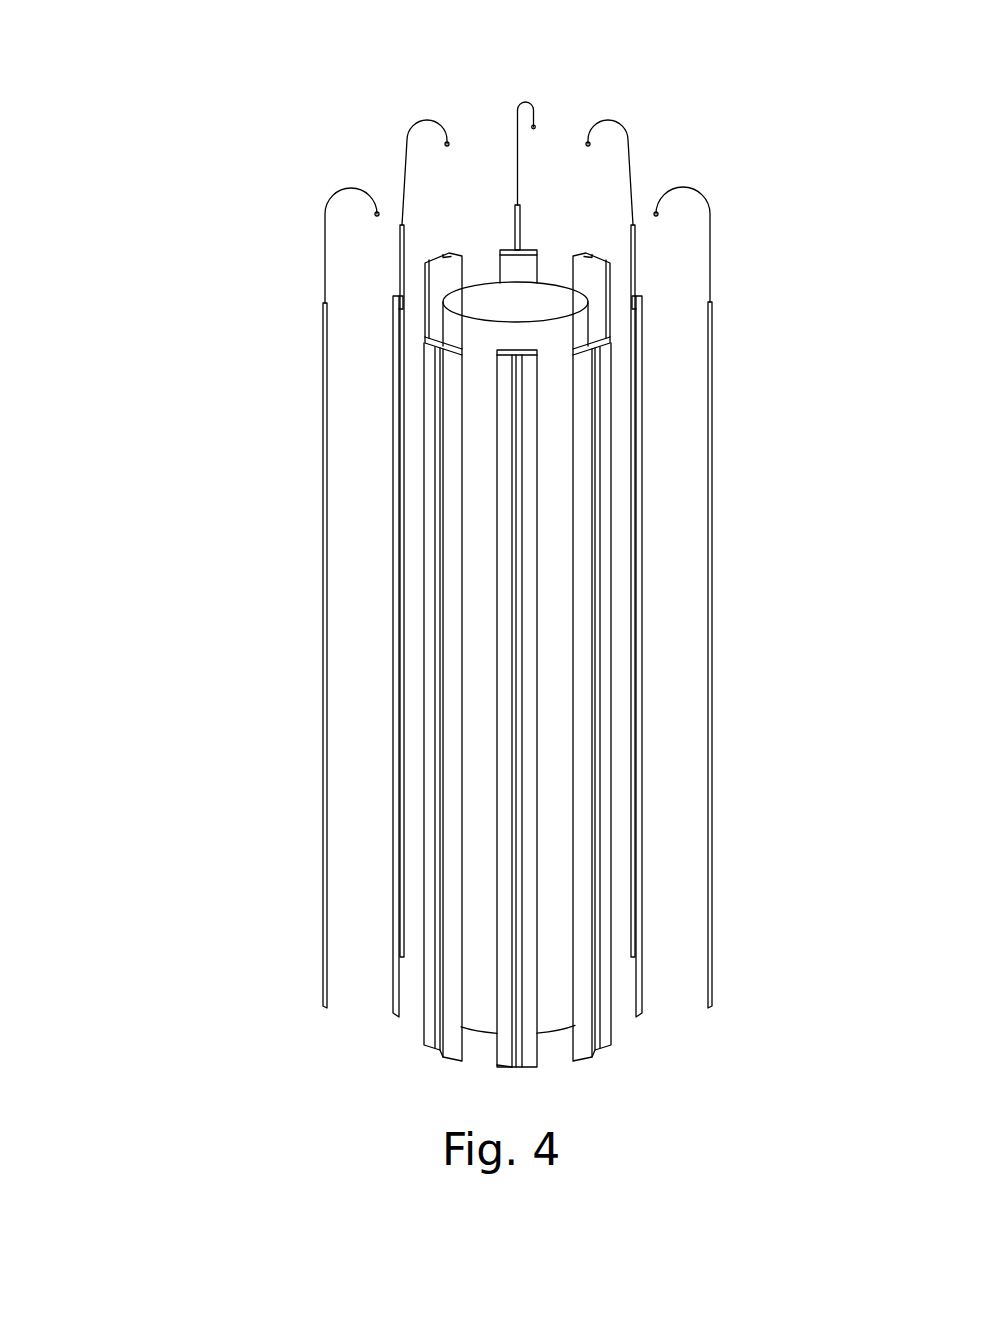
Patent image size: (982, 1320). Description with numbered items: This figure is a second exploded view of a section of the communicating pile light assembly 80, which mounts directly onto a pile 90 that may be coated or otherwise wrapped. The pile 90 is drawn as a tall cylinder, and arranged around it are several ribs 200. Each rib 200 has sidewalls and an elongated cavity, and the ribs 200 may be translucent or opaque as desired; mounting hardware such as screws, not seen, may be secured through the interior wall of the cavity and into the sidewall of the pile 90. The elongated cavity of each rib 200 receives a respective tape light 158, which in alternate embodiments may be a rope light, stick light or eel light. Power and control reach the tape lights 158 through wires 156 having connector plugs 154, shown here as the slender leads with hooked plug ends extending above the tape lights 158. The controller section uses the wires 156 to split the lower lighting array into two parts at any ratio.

The communicating pile light assembly 80 is at (138, 90).
The pile 90 is at (478, 281).
The rib 200 is at (582, 249).
The connector plug 154 is at (449, 141).
The wire 156 is at (326, 230).
The tape light 158 is at (323, 418).